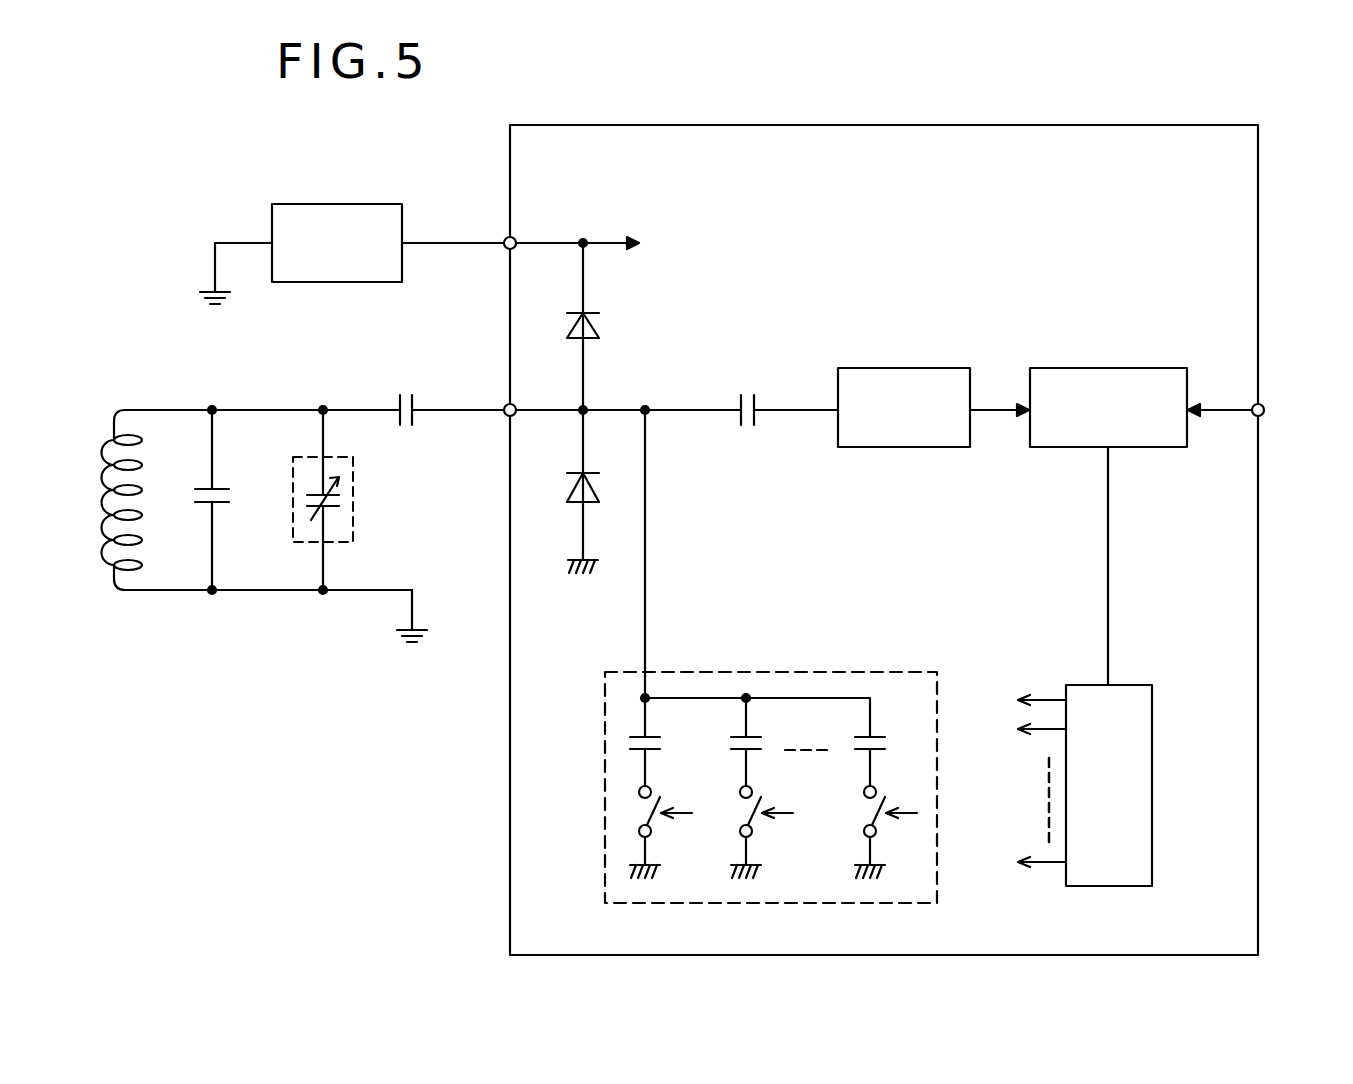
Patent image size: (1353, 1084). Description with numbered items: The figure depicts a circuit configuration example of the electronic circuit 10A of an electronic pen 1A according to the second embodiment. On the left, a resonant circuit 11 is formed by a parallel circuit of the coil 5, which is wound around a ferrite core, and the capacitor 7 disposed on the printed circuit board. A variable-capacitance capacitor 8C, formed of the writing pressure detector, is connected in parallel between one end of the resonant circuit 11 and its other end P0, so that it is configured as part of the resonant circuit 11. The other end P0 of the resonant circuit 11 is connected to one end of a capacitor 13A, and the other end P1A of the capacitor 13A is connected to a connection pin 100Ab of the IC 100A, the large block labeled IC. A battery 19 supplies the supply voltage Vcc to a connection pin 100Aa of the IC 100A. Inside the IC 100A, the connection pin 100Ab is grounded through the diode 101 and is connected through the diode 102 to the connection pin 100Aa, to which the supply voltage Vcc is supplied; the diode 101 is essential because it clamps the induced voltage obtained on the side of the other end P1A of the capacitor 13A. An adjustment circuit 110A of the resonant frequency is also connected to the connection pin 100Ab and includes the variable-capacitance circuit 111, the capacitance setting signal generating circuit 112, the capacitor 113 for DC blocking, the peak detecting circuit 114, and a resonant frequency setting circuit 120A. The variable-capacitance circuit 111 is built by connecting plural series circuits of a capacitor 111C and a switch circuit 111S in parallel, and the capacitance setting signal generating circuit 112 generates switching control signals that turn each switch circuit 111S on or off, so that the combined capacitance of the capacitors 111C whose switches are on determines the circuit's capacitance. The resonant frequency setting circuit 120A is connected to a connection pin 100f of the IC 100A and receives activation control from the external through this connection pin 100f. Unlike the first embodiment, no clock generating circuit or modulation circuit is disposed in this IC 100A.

The electronic pen 1A is at (222, 146).
The electronic circuit 10A is at (600, 102).
The resonant circuit 11 is at (160, 404).
The coil 5 is at (106, 478).
The capacitor 7 is at (231, 494).
The variable-capacitance capacitor 8C is at (355, 500).
The capacitor 13A is at (407, 428).
The battery 19 is at (330, 284).
The IC 100A is at (510, 790).
The connection pin 100Aa is at (513, 238).
The connection pin 100Ab is at (506, 403).
The connection pin 100f is at (1265, 413).
The diode 101 is at (588, 504).
The diode 102 is at (591, 312).
The adjustment circuit of the resonant frequency 110A is at (1043, 519).
The variable-capacitance circuit 111 is at (729, 656).
The capacitor 111C is at (624, 742).
The switch circuit 111S is at (640, 813).
The capacitance setting signal generating circuit 112 is at (1122, 685).
The capacitor for DC blocking 113 is at (749, 428).
The peak detecting circuit 114 is at (898, 450).
The resonant frequency setting circuit 120A is at (1145, 450).
The other end of the resonant circuit P0 is at (213, 406).
The other end of the capacitor P1A is at (465, 395).
The supply voltage Vcc is at (446, 229).
The element IC is at (1023, 163).